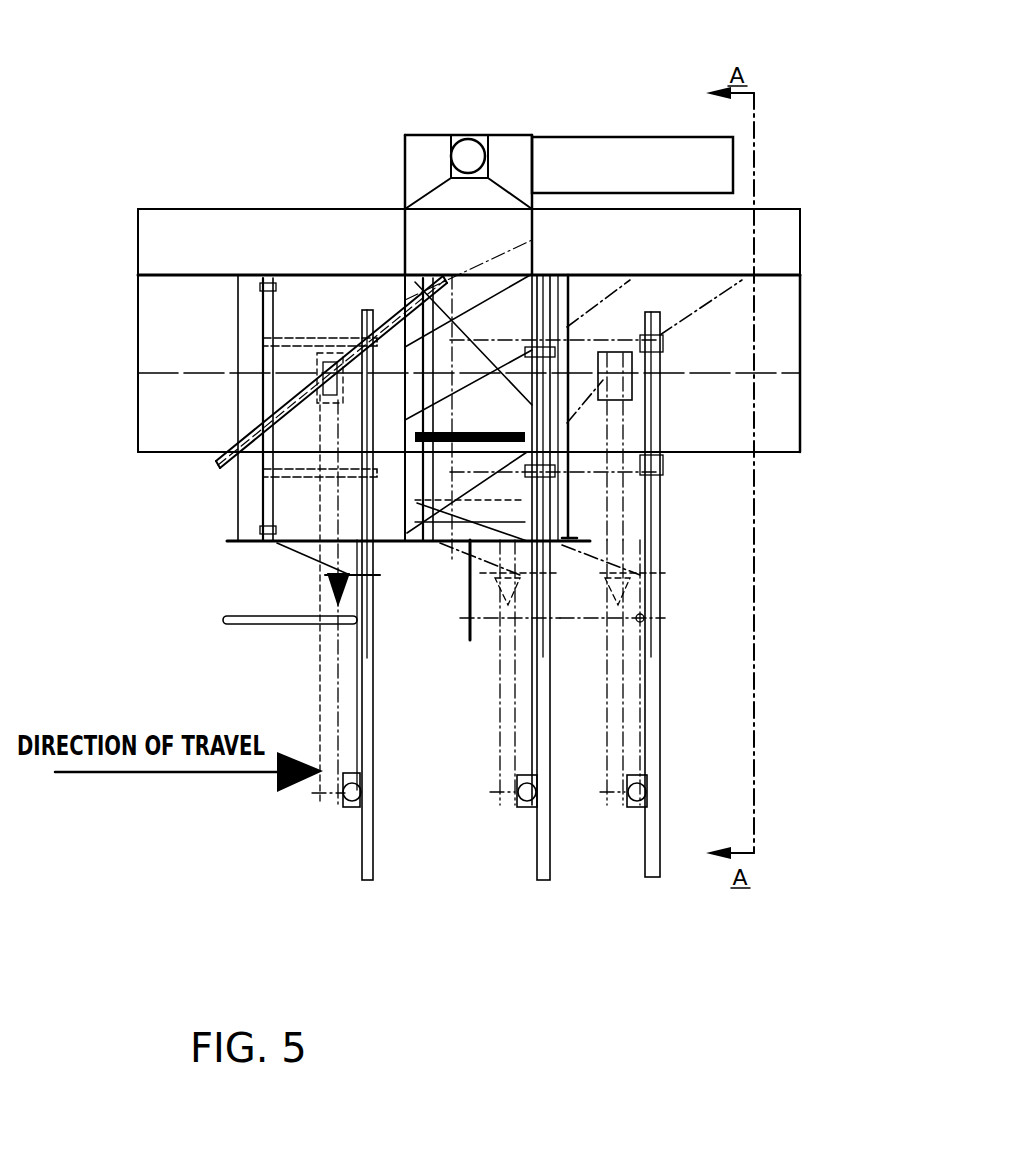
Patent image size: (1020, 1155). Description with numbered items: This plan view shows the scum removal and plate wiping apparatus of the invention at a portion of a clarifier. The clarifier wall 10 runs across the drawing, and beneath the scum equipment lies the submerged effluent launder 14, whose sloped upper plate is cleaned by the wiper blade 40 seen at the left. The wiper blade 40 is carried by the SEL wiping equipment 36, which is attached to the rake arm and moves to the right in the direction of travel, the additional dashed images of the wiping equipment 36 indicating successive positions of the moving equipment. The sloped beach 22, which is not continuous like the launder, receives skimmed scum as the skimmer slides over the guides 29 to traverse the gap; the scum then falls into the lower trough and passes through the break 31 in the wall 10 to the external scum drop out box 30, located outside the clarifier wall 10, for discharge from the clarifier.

The wall 10 is at (787, 240).
The submerged effluent launder 14 is at (806, 309).
The sloped trough or ramp 22 is at (242, 473).
The guides 29 is at (495, 292).
The external drop out box 30 is at (451, 136).
The opening 31 is at (412, 268).
The SEL wiping equipment 36 is at (377, 700).
The wiper blade 40 is at (397, 320).